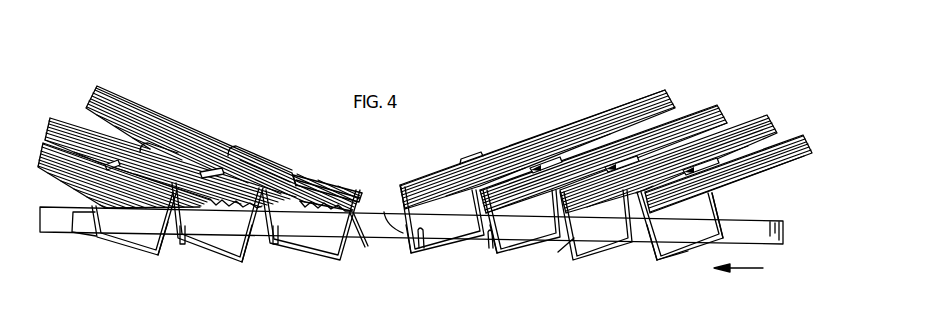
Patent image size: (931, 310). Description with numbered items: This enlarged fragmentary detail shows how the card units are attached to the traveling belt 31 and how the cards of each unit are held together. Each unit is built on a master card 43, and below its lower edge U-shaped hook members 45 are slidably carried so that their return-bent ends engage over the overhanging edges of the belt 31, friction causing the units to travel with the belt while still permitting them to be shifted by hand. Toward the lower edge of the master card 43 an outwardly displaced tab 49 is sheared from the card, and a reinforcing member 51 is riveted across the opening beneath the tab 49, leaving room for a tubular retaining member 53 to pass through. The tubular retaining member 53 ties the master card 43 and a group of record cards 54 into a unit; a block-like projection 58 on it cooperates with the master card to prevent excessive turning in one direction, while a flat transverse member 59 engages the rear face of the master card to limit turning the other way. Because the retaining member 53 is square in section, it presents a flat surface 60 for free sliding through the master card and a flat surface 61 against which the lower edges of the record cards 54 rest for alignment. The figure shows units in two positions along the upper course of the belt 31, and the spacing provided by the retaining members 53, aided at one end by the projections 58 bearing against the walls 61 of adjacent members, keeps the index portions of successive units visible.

The belt 31 is at (388, 234).
The master card 43 is at (75, 112).
The hook member 45 is at (384, 212).
The tab 49 is at (259, 154).
The member 51 is at (270, 163).
The tubular retaining member 53 is at (96, 247).
The record card 54 is at (82, 192).
The projection 58 is at (182, 245).
The flat transverse member 59 is at (317, 178).
The flat surface 60 is at (722, 204).
The flat surface 61 is at (156, 239).